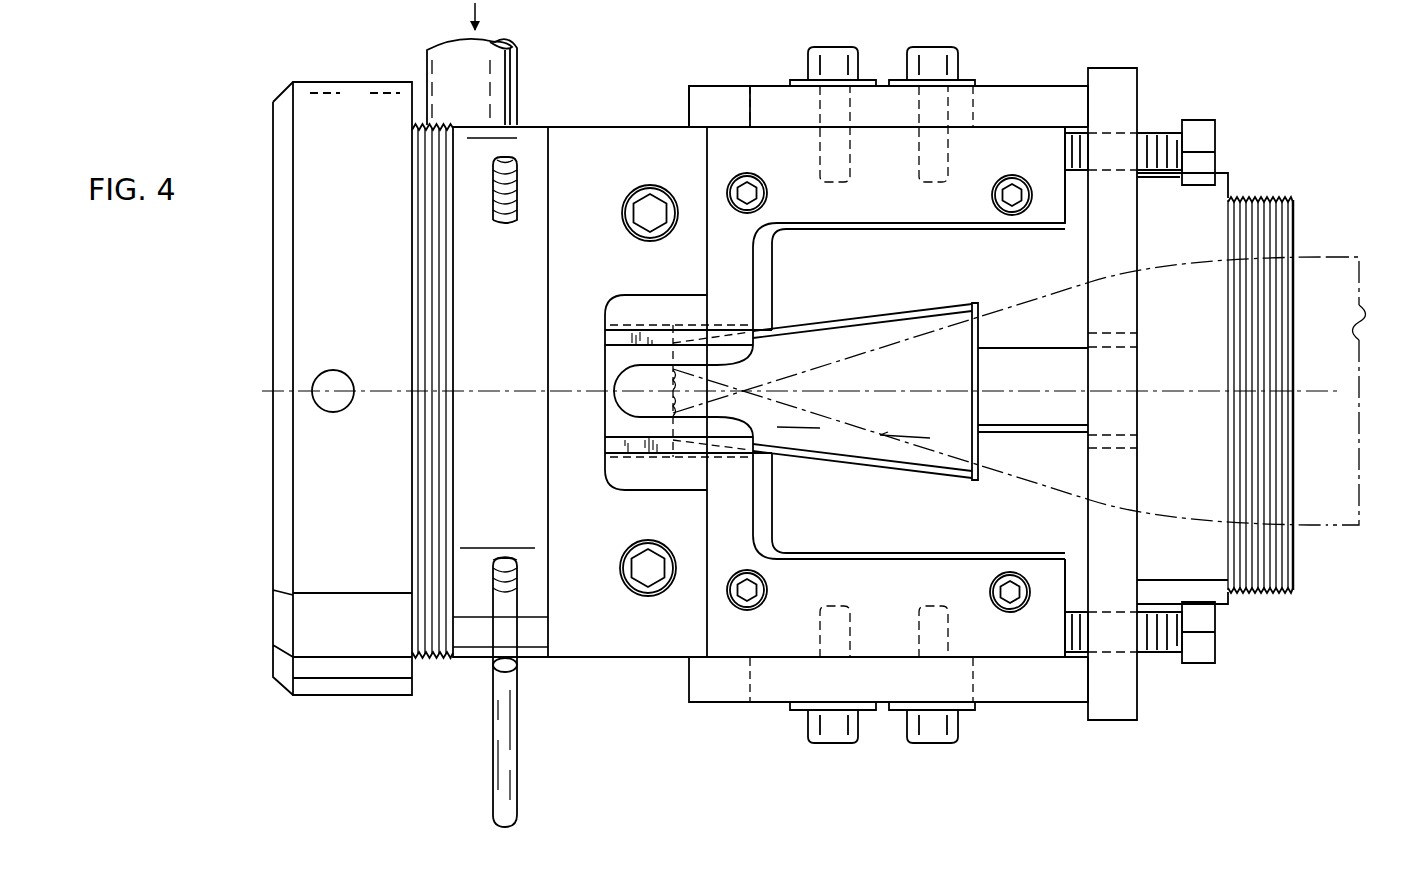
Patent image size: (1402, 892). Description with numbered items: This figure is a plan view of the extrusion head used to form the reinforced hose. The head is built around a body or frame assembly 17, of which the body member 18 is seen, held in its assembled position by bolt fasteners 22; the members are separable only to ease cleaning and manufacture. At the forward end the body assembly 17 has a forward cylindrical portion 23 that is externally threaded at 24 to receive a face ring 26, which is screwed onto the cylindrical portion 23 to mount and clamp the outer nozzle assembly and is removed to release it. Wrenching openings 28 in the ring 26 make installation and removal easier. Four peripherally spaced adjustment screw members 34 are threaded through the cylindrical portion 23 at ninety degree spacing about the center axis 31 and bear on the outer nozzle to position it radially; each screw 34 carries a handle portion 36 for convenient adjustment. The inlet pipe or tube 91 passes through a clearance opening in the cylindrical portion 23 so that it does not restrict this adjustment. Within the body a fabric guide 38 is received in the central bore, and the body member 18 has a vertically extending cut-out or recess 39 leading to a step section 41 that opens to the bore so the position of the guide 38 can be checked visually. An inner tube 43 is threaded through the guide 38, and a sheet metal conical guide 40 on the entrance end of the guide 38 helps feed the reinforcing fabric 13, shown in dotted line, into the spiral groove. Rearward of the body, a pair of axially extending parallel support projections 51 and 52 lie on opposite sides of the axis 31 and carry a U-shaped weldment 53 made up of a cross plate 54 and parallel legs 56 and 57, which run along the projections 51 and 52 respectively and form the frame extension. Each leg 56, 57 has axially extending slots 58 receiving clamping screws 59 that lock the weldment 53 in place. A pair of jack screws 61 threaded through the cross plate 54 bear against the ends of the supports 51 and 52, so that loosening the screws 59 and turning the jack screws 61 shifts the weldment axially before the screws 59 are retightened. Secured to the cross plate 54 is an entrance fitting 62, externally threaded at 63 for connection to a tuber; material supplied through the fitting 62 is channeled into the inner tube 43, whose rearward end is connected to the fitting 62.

The reinforcing fabric 13 is at (1328, 256).
The body or frame assembly 17 is at (596, 124).
The body member 18 is at (577, 658).
The bolt fasteners 22 is at (642, 232).
The forward cylindrical portion 23 is at (484, 361).
The external threads 24 is at (436, 456).
The face ring 26 is at (333, 685).
The wrenching openings 28 is at (340, 407).
The center axis 31 is at (1016, 394).
The adjustment screw members 34 is at (516, 194).
The handle portion 36 is at (512, 796).
The fabric guide 38 is at (628, 385).
The cut-out or recess 39 is at (643, 485).
The conical guide 40 is at (836, 443).
The step section 41 is at (636, 438).
The inner tube 43 is at (996, 422).
The support projection 51 is at (903, 215).
The support projection 52 is at (890, 570).
The U-shaped weldment 53 is at (1027, 88).
The cross plate 54 is at (1130, 97).
The leg 56 is at (713, 92).
The leg 57 is at (722, 693).
The axially extending slots 58 is at (755, 100).
The clamping screws 59 is at (912, 52).
The jack screws 61 is at (1198, 128).
The entrance fitting 62 is at (1215, 192).
The external threads 63 is at (1265, 590).
The inlet pipe or tube 91 is at (505, 72).